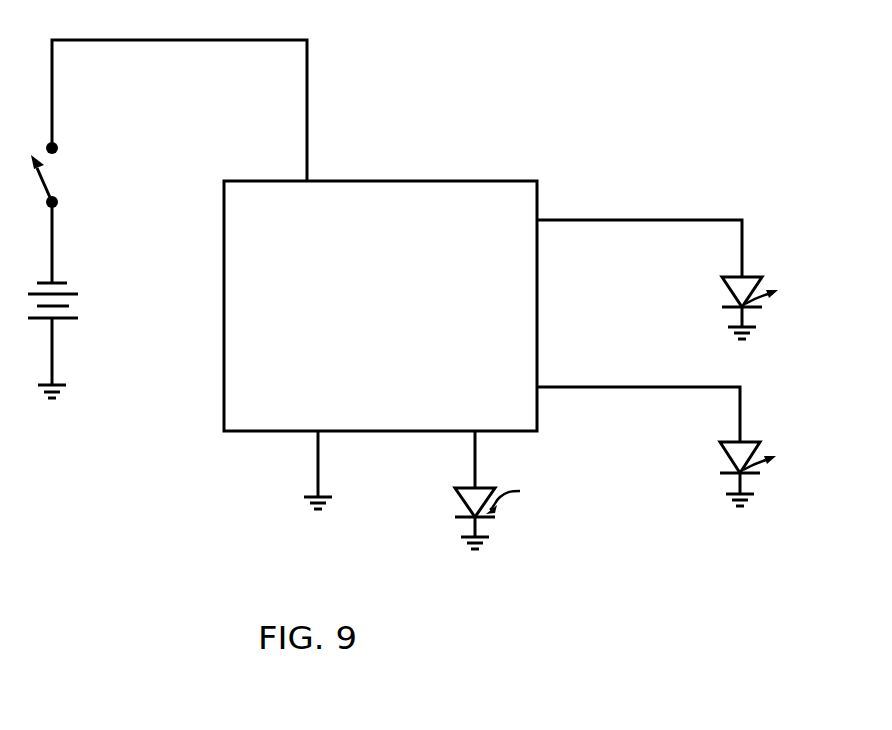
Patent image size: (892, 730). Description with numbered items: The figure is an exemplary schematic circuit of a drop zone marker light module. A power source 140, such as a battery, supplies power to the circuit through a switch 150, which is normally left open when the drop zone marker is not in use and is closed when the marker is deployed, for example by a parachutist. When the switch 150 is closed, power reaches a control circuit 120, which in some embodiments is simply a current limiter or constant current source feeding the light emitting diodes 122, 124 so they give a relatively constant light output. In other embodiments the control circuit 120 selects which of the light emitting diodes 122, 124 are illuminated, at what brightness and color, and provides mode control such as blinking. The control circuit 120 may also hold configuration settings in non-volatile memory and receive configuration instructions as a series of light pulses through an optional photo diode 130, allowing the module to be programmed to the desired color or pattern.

The control circuit 120 is at (500, 391).
The light emitting diode 122 is at (756, 272).
The light emitting diode 124 is at (754, 437).
The photo diode 130 is at (457, 497).
The power source 140 is at (80, 294).
The switch 150 is at (44, 178).